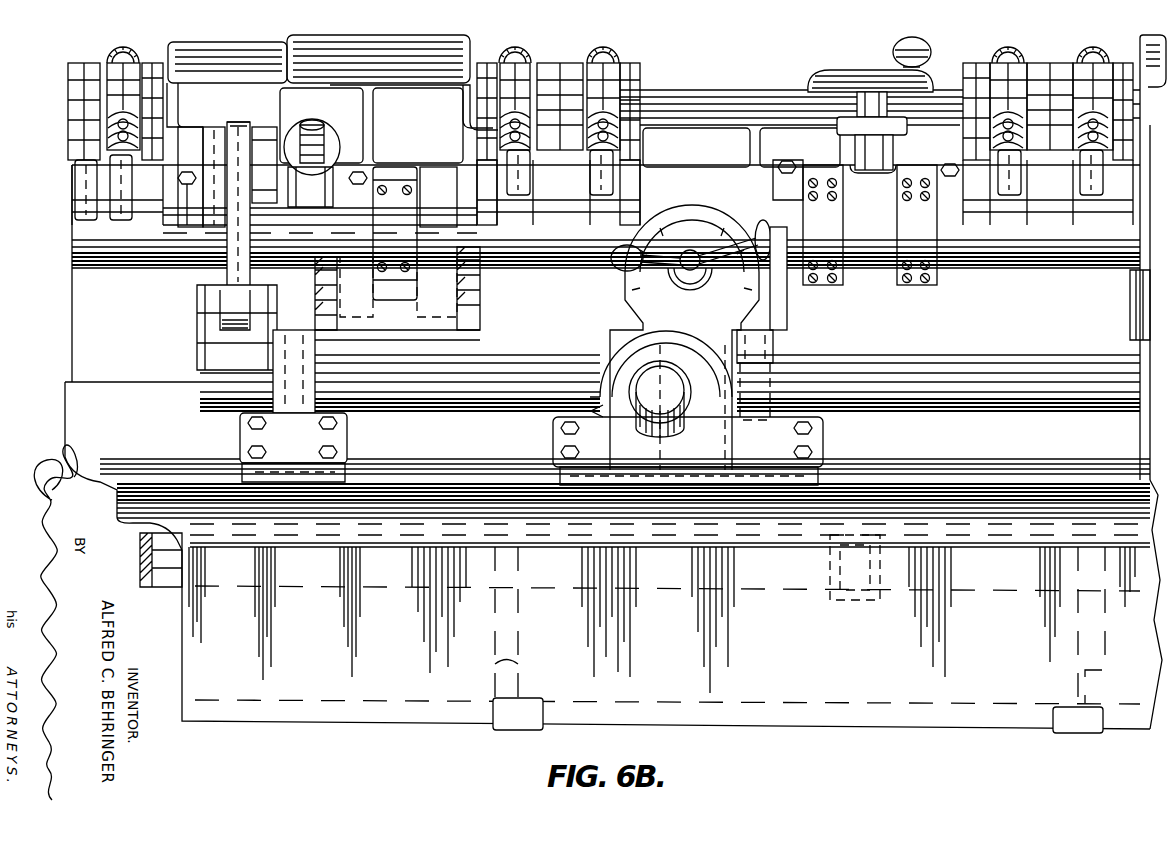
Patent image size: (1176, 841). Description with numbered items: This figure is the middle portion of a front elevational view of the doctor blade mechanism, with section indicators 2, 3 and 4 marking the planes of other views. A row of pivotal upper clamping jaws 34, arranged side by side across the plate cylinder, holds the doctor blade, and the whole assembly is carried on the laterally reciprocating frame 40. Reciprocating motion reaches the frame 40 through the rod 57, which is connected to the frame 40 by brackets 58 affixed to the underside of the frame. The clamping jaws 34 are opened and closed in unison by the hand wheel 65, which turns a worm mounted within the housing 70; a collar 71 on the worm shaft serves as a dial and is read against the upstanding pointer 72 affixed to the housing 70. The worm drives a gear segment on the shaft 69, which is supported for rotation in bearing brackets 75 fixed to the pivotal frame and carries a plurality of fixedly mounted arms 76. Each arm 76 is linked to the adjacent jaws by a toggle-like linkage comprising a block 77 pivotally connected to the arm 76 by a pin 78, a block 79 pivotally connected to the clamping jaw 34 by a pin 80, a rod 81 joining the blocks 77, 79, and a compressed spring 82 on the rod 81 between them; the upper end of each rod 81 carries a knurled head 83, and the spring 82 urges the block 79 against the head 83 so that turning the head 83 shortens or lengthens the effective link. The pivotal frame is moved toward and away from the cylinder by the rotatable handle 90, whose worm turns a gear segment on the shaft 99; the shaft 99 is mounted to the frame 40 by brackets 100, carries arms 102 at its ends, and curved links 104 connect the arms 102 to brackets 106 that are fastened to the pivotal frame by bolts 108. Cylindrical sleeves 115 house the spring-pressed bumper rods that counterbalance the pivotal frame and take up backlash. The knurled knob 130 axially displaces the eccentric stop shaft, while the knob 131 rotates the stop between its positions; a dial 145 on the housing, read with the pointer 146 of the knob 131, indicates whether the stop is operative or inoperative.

The section line 2- 2 is at (180, 47).
The section line 3- 3 is at (758, 253).
The section line 4- 4 is at (773, 60).
The pivotal upper clamping jaw 34 is at (290, 56).
The reciprocating frame 40 is at (127, 396).
The rod 57 is at (148, 547).
The bracket 58 is at (873, 540).
The hand wheel 65 is at (850, 74).
The shaft 69 is at (432, 222).
The housing 70 is at (855, 146).
The collar 71 is at (925, 117).
The pointer 72 is at (893, 146).
The bracket 75 is at (388, 210).
The arm 76 is at (90, 268).
The block 77 is at (595, 182).
The pin 78 is at (490, 190).
The block 79 is at (112, 72).
The pin 80 is at (165, 78).
The rod 81 is at (100, 112).
The compressed spring 82 is at (105, 135).
The knurled head 83 is at (125, 52).
The rotatable handle 90 is at (712, 232).
The shaft 99 is at (552, 360).
The bracket 100 is at (297, 398).
The arm 102 is at (210, 336).
The curved link 104 is at (232, 268).
The bracket 106 is at (277, 140).
The bolt 108 is at (190, 170).
The cylindrical sleeve 115 is at (292, 140).
The knurled knob 130 is at (615, 362).
The knob 131 is at (725, 437).
The dial 145 is at (777, 370).
The pointer 146 is at (642, 412).